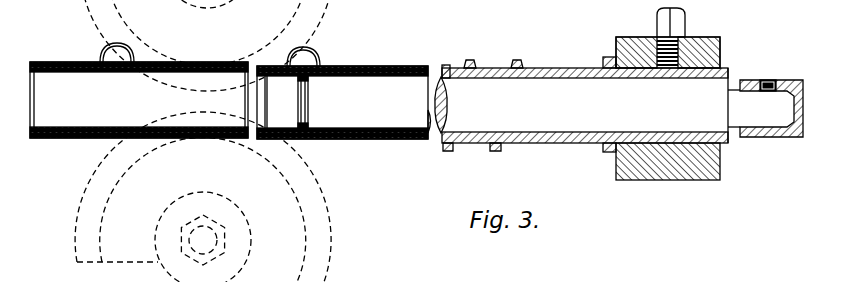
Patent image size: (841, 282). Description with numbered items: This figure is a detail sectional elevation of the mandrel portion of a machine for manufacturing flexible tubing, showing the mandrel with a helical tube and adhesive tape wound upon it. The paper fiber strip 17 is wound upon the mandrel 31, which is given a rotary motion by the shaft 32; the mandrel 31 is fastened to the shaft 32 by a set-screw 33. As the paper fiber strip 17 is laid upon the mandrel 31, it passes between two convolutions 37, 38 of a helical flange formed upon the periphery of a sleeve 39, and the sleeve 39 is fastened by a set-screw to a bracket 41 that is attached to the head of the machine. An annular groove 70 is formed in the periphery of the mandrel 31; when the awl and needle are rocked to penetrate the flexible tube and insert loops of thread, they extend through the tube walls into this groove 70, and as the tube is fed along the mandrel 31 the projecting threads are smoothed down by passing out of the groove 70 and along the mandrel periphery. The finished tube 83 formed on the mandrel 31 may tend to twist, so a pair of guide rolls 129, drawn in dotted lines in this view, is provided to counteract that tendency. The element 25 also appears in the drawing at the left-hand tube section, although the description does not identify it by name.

The outer tube section 25 is at (193, 62).
The paper fiber strip 17 is at (355, 82).
The annular groove 70 is at (306, 97).
The tube 83 is at (393, 140).
The mandrel 31 is at (591, 94).
The convolution of helical flange 37 is at (470, 60).
The convolution of helical flange 38 is at (520, 65).
The sleeve 39 is at (585, 67).
The bracket 41 is at (706, 46).
The set-screw 33 is at (769, 80).
The shaft 32 is at (771, 92).
The guide rolls 129 is at (326, 222).